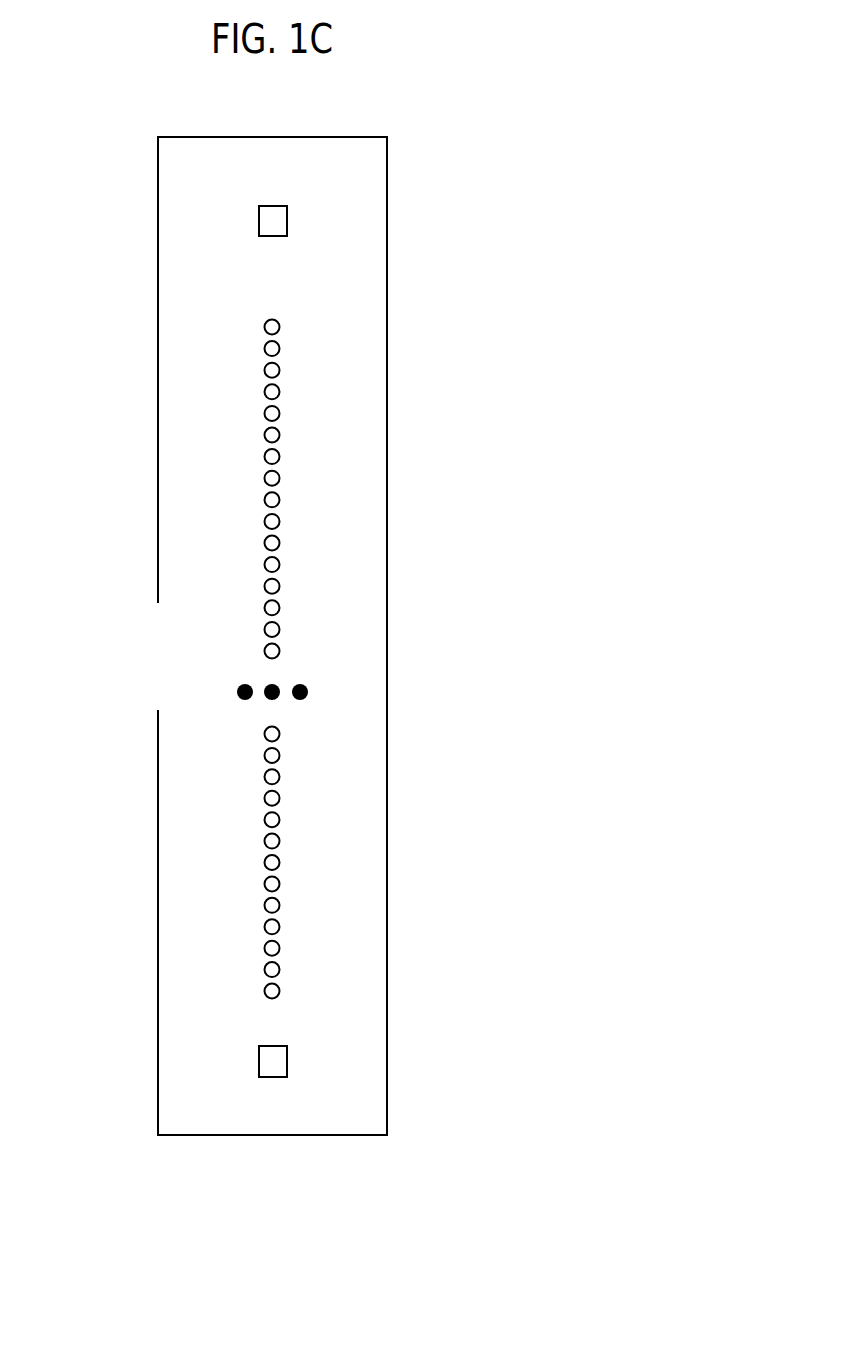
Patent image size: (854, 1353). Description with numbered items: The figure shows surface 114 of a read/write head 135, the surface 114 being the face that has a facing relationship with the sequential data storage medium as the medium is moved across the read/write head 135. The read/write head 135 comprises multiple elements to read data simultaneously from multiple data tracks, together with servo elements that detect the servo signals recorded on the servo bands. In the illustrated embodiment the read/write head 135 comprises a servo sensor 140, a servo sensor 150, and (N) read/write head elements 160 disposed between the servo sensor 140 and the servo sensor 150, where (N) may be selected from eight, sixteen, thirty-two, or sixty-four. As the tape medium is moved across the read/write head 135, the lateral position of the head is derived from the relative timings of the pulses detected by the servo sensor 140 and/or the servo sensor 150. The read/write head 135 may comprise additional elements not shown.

The surface 114 is at (359, 664).
The read/write head 135 is at (272, 724).
The servo sensor 140 is at (272, 222).
The servo sensor 150 is at (272, 1066).
The read/write head elements 160 is at (275, 638).